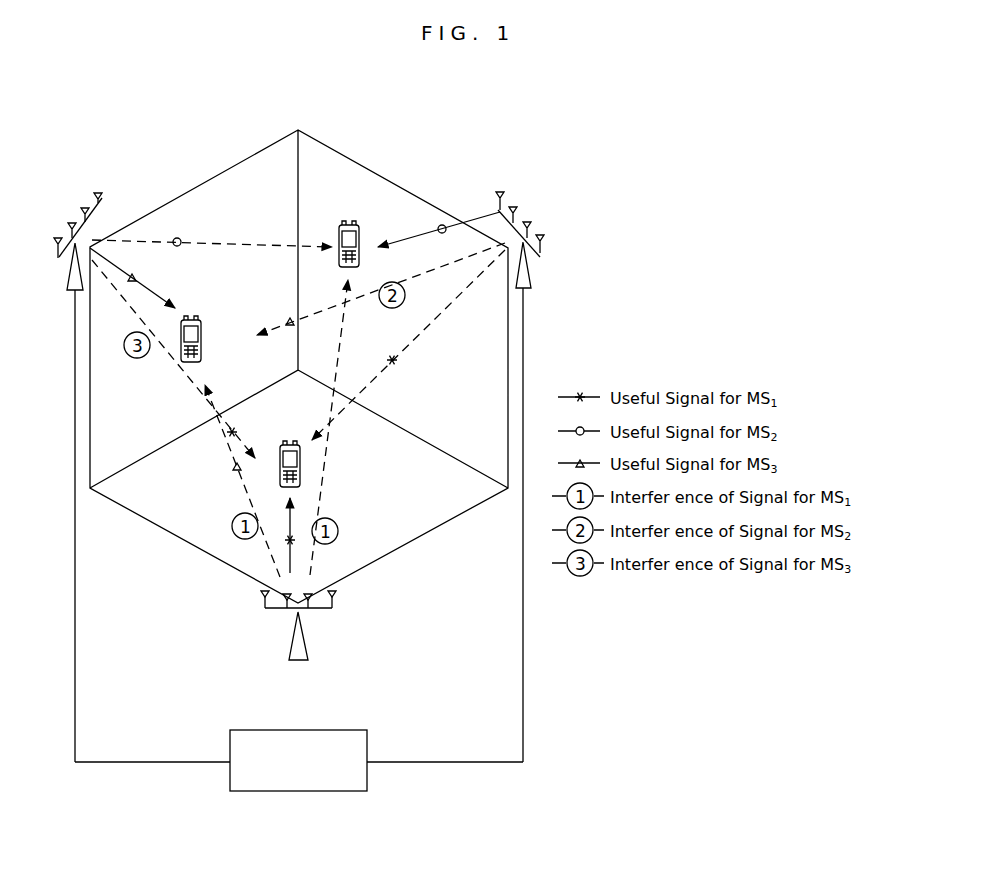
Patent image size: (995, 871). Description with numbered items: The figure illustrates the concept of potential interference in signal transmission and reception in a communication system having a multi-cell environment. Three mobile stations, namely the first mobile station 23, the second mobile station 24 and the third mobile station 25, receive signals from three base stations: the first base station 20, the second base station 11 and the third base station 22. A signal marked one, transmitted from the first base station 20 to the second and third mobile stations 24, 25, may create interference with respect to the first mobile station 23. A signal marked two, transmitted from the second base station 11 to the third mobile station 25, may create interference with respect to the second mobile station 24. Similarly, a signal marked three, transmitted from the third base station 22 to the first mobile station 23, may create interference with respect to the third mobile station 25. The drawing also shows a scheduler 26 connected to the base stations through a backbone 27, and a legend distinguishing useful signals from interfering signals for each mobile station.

The second base station BS2 11 is at (563, 272).
The base station 20 is at (352, 645).
The base station 22 is at (37, 310).
The mobile station 23 is at (352, 488).
The mobile station 24 is at (368, 238).
The mobile station 25 is at (207, 320).
The scheduler 26 is at (352, 791).
The backbone 27 is at (581, 755).